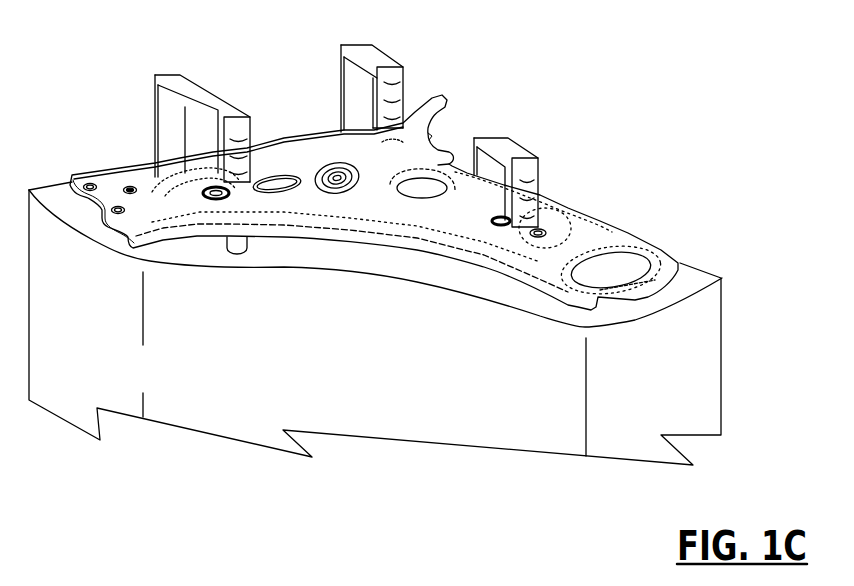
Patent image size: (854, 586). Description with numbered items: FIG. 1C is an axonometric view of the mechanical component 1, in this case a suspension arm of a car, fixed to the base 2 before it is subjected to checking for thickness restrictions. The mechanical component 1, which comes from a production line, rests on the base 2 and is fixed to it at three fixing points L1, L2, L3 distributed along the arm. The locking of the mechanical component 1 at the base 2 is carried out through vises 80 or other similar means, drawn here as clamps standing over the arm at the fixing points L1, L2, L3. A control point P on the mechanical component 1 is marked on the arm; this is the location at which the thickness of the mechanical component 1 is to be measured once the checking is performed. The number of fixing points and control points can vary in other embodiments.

The control arm 1 is at (120, 161).
The fixture base block 2 is at (359, 369).
The clamps 80 is at (516, 136).
The first locating point L1 is at (535, 218).
The second locating point L2 is at (392, 128).
The third locating point L3 is at (248, 172).
The reference point P is at (502, 247).